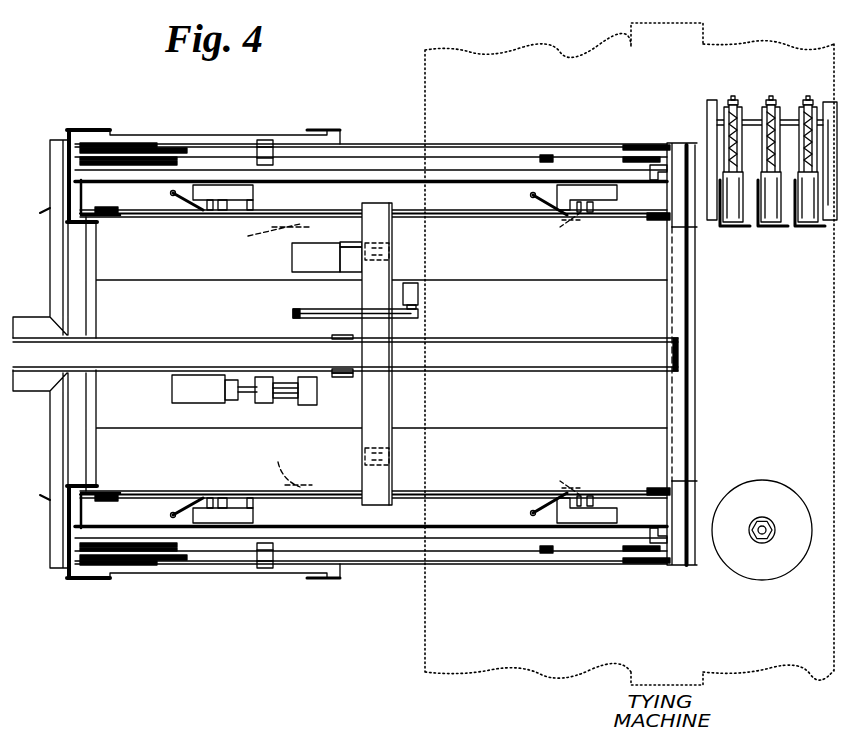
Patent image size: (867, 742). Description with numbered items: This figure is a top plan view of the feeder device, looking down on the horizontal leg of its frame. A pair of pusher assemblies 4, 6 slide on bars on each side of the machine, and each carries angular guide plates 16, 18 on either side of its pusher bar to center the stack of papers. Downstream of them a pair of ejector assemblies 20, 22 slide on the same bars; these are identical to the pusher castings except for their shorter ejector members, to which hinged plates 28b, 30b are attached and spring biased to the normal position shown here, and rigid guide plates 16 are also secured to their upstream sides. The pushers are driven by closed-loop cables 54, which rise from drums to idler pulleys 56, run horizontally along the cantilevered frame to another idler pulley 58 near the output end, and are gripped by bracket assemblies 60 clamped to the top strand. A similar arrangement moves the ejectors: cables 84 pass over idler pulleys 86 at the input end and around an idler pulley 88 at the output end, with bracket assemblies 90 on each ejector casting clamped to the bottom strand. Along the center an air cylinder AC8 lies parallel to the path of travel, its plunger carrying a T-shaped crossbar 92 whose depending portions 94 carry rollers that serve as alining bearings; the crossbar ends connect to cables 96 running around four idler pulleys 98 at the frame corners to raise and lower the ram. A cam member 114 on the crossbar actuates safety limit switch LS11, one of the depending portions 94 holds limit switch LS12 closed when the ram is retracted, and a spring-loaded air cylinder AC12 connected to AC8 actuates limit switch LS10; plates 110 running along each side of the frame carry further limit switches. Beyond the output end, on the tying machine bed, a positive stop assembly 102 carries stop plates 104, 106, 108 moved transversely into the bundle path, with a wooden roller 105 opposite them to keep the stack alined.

The pusher assembly 4 is at (256, 515).
The pusher assembly 6 is at (256, 193).
The angular guide plate 16 is at (173, 193).
The angular guide plate 18 is at (269, 355).
The ejector assembly 20 is at (582, 523).
The ejector assembly 22 is at (582, 185).
The hinged plate 28b is at (607, 480).
The hinged plate 30b is at (607, 228).
The cable 54 is at (408, 143).
The idler pulley 56 is at (137, 143).
The idler pulley 58 is at (650, 145).
The bracket assembly 60 is at (262, 140).
The cable 84 is at (468, 157).
The idler pulley 86 is at (147, 165).
The idler pulley 88 is at (657, 166).
The bracket assembly 90 is at (545, 155).
The crossbar 92 is at (392, 398).
The depending portion 94 is at (392, 253).
The cable 96 is at (452, 208).
The idler pulley 98 is at (118, 213).
The positive stop assembly 102 is at (772, 168).
The stop plate 104 is at (773, 228).
The wooden roller 105 is at (762, 580).
The stop plate 106 is at (738, 228).
The stop plate 108 is at (806, 228).
The plate 110 is at (358, 180).
The cam member 114 is at (293, 313).
The limit switch LS10 is at (172, 395).
The limit switch LS11 is at (418, 297).
The limit switch LS12 is at (292, 260).
The air cylinder AC8 is at (342, 380).
The air cylinder AC12 is at (280, 403).